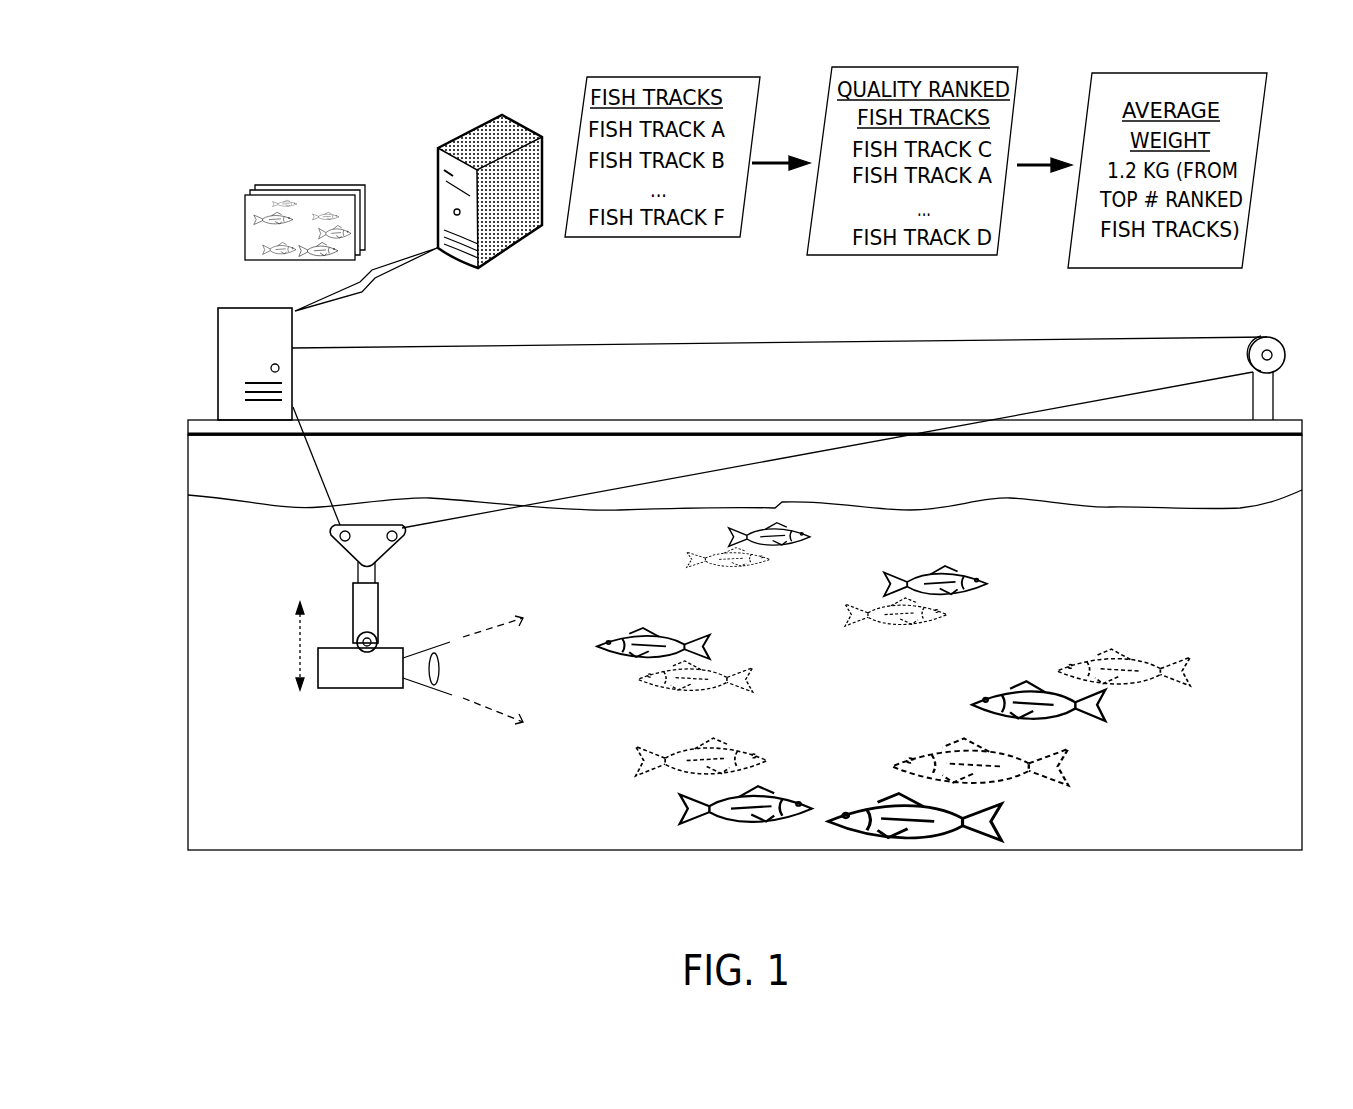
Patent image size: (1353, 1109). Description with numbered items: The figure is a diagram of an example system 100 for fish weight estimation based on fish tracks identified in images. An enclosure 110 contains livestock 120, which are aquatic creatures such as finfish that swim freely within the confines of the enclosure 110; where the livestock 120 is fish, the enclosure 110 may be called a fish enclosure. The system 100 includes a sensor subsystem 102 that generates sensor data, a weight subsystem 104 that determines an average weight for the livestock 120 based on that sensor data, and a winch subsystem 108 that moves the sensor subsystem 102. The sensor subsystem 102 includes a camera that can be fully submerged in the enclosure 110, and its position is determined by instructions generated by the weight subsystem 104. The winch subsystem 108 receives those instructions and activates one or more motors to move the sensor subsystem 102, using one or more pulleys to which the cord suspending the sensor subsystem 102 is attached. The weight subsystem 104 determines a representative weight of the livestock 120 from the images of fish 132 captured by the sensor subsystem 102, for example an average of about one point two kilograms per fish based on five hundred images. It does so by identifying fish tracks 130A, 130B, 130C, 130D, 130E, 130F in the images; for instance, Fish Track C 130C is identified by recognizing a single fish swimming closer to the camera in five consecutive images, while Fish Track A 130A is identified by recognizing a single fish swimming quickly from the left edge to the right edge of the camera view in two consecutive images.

The system 100 is at (153, 120).
The sensor subsystem 102 is at (380, 642).
The weight subsystem 104 is at (480, 122).
The winch subsystem 108 is at (255, 364).
The enclosure 110 is at (188, 570).
The livestock 120 is at (1137, 572).
The fish track 130A is at (714, 540).
The fish track 130B is at (873, 589).
The fish track 130C is at (723, 654).
The fish track 130D is at (1120, 707).
The fish track 130E is at (665, 800).
The fish track 130F is at (1026, 808).
The images of fish 132 is at (247, 195).